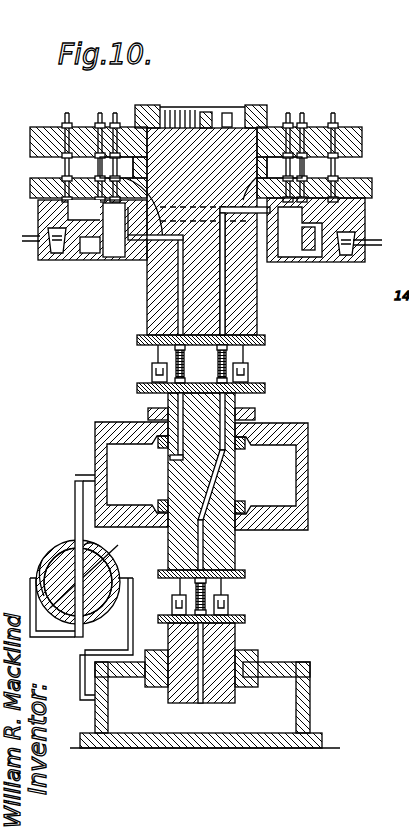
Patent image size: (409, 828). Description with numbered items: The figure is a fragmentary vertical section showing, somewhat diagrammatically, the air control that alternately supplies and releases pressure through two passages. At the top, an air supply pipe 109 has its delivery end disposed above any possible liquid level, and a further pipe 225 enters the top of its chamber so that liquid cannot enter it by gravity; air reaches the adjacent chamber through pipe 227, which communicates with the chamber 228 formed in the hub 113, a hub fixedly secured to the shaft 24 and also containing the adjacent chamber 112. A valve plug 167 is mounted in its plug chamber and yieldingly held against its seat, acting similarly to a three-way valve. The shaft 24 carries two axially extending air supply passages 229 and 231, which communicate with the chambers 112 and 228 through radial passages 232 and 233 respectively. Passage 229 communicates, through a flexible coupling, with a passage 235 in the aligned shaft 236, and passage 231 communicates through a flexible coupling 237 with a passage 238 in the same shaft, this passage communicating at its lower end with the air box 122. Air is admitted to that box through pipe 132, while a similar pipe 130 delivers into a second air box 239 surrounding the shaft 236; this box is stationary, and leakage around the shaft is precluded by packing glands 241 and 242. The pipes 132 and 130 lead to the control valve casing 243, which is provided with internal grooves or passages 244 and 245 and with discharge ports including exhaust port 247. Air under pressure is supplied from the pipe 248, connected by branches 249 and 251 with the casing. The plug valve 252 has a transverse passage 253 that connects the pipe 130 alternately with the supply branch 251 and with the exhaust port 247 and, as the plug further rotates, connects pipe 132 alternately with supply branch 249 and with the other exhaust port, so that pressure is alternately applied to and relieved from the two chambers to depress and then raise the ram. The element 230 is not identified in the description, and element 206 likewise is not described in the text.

The air supply pipe 109 is at (66, 113).
The pipe 227 is at (100, 113).
The pipe 225 is at (126, 103).
The radial passage 232 is at (131, 198).
The radial passage 233 is at (272, 178).
The shaft 24 is at (240, 281).
The air supply passage 231 is at (228, 306).
The air supply passage 229 is at (178, 308).
The chamber 112 is at (110, 252).
The chamber 228 is at (118, 212).
The valve plug 167 is at (55, 255).
The hub 113 is at (328, 262).
The spring 230 is at (176, 361).
The flexible coupling 237 is at (228, 361).
The passage 238 is at (236, 470).
The passage 235 is at (170, 404).
The second air box 239 is at (96, 458).
The packing gland 241 is at (252, 423).
The packing gland 242 is at (258, 545).
The shaft 236 is at (224, 556).
The air box 122 is at (311, 675).
The control valve casing 243 is at (60, 552).
The transverse passage 253 is at (72, 542).
The pipe 130 is at (75, 488).
The internal groove or passage 244 is at (100, 546).
The plug valve 252 is at (112, 560).
The pipe 206 is at (40, 575).
The supply branch 249 is at (31, 580).
The internal groove or passage 245 is at (81, 639).
The exhaust port 247 is at (47, 622).
The supply branch 251 is at (54, 661).
The pipe 132 is at (80, 677).
The pipe 248 is at (62, 690).